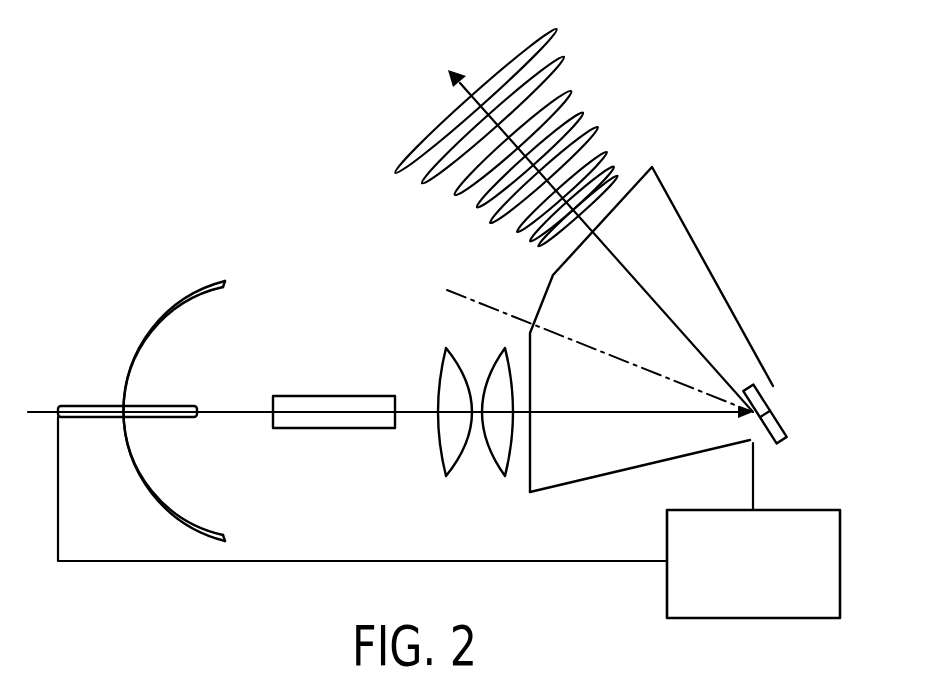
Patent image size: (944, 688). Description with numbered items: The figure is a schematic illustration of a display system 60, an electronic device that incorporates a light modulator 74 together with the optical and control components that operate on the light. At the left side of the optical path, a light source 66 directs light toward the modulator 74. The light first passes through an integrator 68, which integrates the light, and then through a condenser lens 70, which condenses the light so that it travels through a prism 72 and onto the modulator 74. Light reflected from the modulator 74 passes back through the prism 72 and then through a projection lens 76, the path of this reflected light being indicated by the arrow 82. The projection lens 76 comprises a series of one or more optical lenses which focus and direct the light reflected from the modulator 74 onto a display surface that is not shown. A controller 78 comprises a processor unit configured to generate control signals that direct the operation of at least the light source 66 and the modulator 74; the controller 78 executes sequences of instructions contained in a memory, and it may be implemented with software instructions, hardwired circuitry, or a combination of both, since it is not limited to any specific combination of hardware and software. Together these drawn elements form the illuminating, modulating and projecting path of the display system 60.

The display system 60 is at (290, 170).
The light source 66 is at (112, 317).
The integrator 68 is at (298, 429).
The condenser lens 70 is at (487, 460).
The prism 72 is at (637, 467).
The light modulator 74 is at (777, 386).
The projection lens 76 is at (562, 60).
The controller 78 is at (841, 563).
The arrow 82 is at (645, 290).